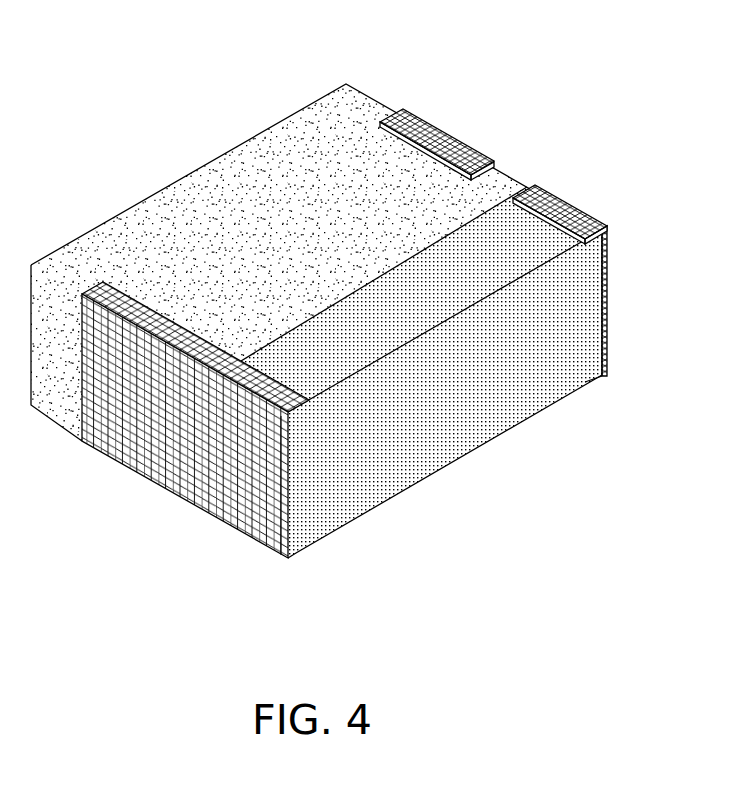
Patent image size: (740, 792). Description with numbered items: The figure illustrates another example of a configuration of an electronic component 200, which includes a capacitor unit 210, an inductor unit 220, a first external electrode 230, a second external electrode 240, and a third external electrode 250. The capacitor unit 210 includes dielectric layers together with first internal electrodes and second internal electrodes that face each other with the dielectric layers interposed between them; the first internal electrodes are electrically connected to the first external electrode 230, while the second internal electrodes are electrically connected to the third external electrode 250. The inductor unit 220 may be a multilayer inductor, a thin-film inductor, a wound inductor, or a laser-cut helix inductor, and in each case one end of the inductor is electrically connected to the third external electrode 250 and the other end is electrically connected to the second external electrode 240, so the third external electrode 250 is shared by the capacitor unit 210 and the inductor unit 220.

The electronic component 200 is at (188, 48).
The capacitor unit 210 is at (483, 243).
The inductor unit 220 is at (173, 210).
The first external electrode 230 is at (573, 218).
The second external electrode 240 is at (440, 140).
The third external electrode 250 is at (142, 450).